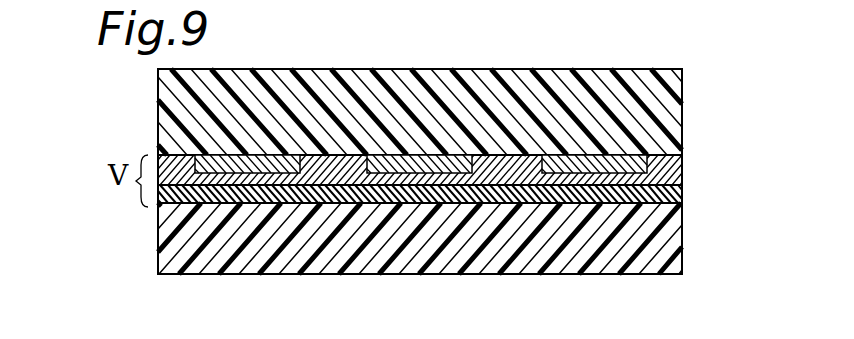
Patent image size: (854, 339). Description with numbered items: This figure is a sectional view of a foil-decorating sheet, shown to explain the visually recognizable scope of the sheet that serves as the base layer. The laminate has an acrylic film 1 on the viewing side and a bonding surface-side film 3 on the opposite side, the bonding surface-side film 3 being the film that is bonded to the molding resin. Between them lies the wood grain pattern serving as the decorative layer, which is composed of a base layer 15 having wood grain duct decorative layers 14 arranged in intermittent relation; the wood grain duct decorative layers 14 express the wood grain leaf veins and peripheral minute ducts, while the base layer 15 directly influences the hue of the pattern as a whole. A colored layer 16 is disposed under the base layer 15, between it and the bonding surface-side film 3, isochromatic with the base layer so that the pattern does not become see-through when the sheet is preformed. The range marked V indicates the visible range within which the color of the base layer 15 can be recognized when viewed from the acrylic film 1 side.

The acrylic film 1 is at (683, 114).
The wood grain duct decorative layer 14 is at (634, 157).
The base layer 15 is at (683, 171).
The colored layer 16 is at (683, 198).
The bonding surface-side film 3 is at (683, 224).